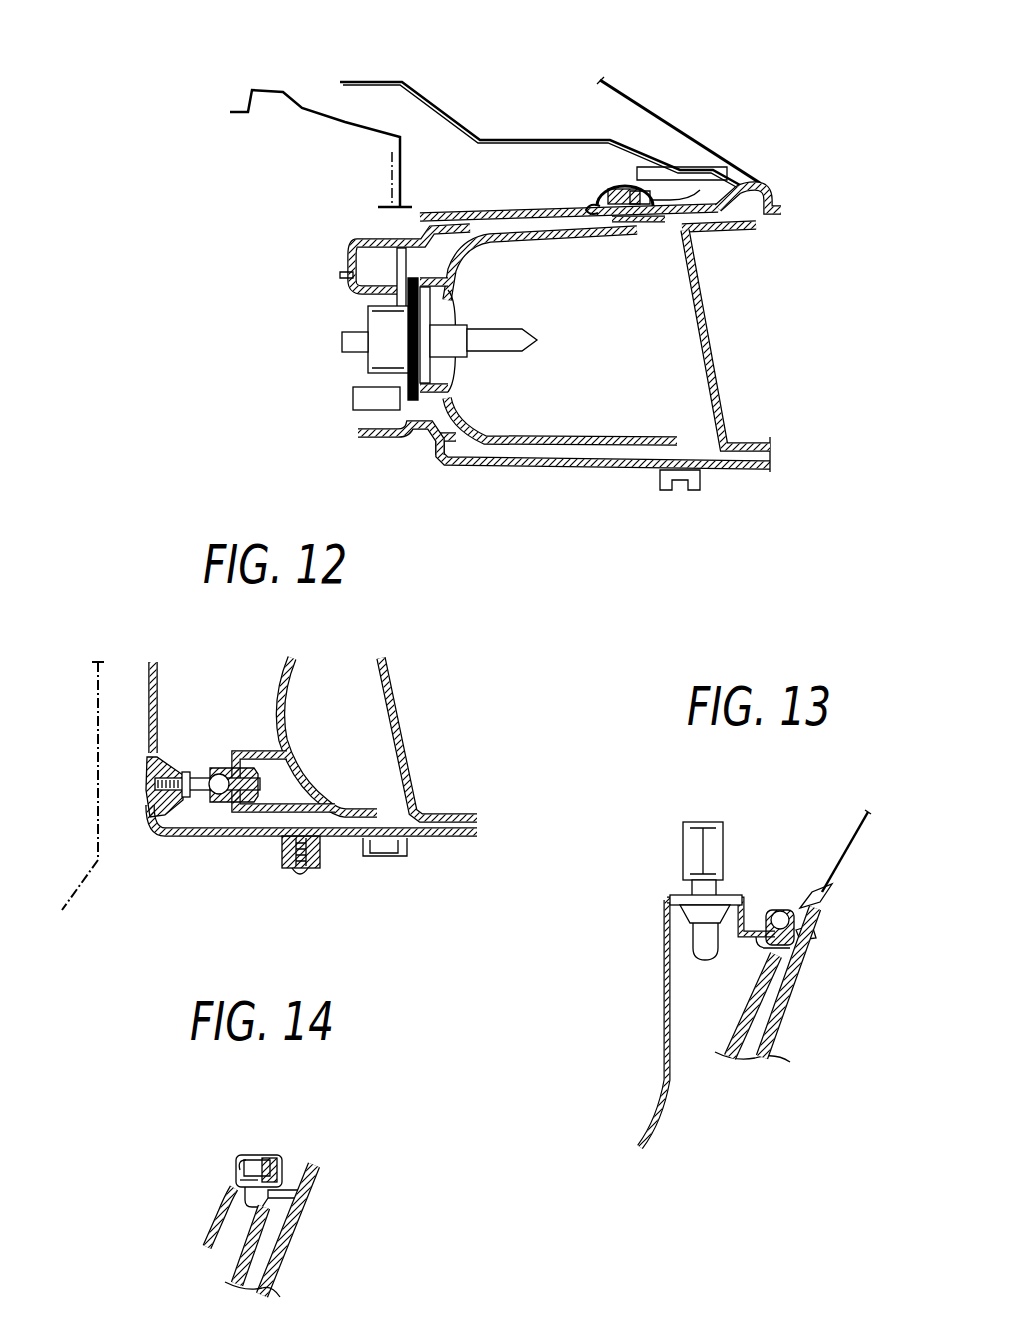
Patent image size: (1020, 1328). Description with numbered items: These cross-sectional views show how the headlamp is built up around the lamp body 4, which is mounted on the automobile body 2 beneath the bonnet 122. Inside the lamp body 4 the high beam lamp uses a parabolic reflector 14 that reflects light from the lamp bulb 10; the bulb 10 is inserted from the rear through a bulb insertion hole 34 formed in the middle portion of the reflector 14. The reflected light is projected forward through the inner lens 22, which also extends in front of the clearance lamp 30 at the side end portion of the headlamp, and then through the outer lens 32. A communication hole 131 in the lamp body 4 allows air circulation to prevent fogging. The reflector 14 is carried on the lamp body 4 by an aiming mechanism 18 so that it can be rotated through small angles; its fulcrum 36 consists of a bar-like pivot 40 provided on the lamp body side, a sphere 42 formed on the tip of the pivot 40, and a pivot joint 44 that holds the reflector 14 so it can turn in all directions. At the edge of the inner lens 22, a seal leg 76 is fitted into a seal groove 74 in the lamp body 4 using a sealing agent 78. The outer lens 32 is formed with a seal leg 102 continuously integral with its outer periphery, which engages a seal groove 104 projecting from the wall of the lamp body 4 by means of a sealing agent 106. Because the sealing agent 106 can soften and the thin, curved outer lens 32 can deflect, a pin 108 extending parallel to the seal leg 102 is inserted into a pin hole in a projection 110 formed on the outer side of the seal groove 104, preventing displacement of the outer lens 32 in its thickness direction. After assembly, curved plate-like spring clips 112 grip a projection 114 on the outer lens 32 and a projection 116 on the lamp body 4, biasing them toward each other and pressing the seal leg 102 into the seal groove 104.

In FIG. 11, the automobile body 2 is at (332, 123).
In FIG. 11, the lamp body 4 is at (450, 227).
In FIG. 12, the lamp body 4 is at (158, 822).
In FIG. 13, the lamp body 4 is at (660, 1027).
In FIG. 14, the lamp body 4 is at (210, 1230).
In FIG. 11, the lamp bulb 10 is at (543, 340).
In FIG. 11, the reflector 14 is at (565, 240).
In FIG. 12, the reflector 14 is at (312, 775).
In FIG. 12, the aiming mechanism 18 is at (142, 762).
In FIG. 11, the inner lens 22 is at (715, 345).
In FIG. 12, the inner lens 22 is at (415, 755).
In FIG. 13, the inner lens 22 is at (745, 1063).
In FIG. 14, the inner lens 22 is at (265, 1270).
In FIG. 13, the clearance lamp 30 is at (690, 993).
In FIG. 11, the outer lens 32 is at (730, 185).
In FIG. 13, the outer lens 32 is at (800, 1003).
In FIG. 14, the outer lens 32 is at (300, 1228).
In FIG. 11, the bulb insertion hole 34 is at (455, 368).
In FIG. 12, the fulcrum 36 is at (207, 780).
In FIG. 12, the pivot 40 is at (205, 792).
In FIG. 12, the sphere 42 is at (225, 797).
In FIG. 12, the pivot joint 44 is at (225, 775).
In FIG. 14, the seal groove 74 is at (248, 1157).
In FIG. 14, the seal leg 76 is at (240, 1165).
In FIG. 14, the sealing agent 78 is at (240, 1180).
In FIG. 11, the seal leg 102 is at (620, 185).
In FIG. 13, the seal leg 102 is at (777, 908).
In FIG. 14, the seal leg 102 is at (267, 1138).
In FIG. 11, the seal groove 104 is at (640, 187).
In FIG. 13, the seal groove 104 is at (790, 910).
In FIG. 14, the seal groove 104 is at (282, 1168).
In FIG. 11, the sealing agent 106 is at (635, 222).
In FIG. 13, the sealing agent 106 is at (760, 912).
In FIG. 14, the sealing agent 106 is at (300, 1194).
In FIG. 13, the pin 108 is at (822, 890).
In FIG. 13, the projection 110 is at (818, 937).
In FIG. 11, the clip 112 is at (600, 190).
In FIG. 11, the projection 114 is at (660, 190).
In FIG. 11, the projection 116 is at (592, 200).
In FIG. 11, the bonnet 122 is at (700, 165).
In FIG. 11, the communication hole 131 is at (340, 274).